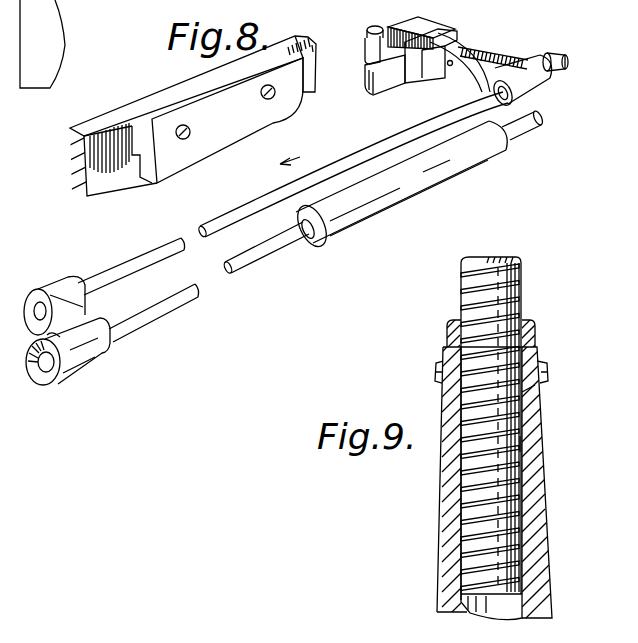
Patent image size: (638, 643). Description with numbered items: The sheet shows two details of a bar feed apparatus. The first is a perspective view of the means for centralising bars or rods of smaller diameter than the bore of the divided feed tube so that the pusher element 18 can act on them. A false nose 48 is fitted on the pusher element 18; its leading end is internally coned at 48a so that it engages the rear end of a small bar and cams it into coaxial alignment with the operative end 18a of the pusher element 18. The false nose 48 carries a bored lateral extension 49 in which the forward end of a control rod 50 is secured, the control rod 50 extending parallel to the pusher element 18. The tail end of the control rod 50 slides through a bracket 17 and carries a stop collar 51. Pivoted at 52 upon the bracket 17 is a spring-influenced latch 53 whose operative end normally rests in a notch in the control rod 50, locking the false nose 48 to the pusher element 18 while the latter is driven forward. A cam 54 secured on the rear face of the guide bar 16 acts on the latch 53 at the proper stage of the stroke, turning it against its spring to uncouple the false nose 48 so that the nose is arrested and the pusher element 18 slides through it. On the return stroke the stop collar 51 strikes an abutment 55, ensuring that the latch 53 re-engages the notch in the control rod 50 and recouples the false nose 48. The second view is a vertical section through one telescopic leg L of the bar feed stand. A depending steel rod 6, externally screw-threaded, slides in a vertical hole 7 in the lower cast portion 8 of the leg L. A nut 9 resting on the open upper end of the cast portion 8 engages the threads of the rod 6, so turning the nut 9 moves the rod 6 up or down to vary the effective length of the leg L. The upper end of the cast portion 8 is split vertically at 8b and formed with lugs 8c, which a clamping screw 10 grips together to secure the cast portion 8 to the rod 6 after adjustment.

In FIG. 8, the abutment 55 is at (62, 46).
In FIG. 8, the cam 54 is at (288, 113).
In FIG. 8, the guide bar (slideway) 16 is at (115, 177).
In FIG. 8, the pusher element 18 is at (412, 197).
In FIG. 8, the operative end of the pusher element 18a is at (183, 303).
In FIG. 8, the bracket 17 is at (444, 27).
In FIG. 8, the pivot 52 is at (449, 66).
In FIG. 8, the stop collar 51 is at (559, 54).
In FIG. 8, the spring-influenced latch 53 is at (524, 84).
In FIG. 8, the control rod 50 is at (130, 263).
In FIG. 8, the bored lateral extension 49 is at (53, 281).
In FIG. 8, the false nose 48 is at (86, 369).
In FIG. 8, the internally coned leading end 48a is at (48, 378).
In FIG. 9, the depending steel rod 6 is at (522, 288).
In FIG. 9, the nut 9 is at (447, 329).
In FIG. 9, the clamping screw 10 is at (547, 360).
In FIG. 9, the lower cast portion 8 is at (543, 499).
In FIG. 9, the lugs 8c is at (533, 392).
In FIG. 9, the vertical split 8b is at (532, 445).
In FIG. 9, the vertical hole 7 is at (523, 604).
In FIG. 9, the telescopic leg L is at (440, 525).